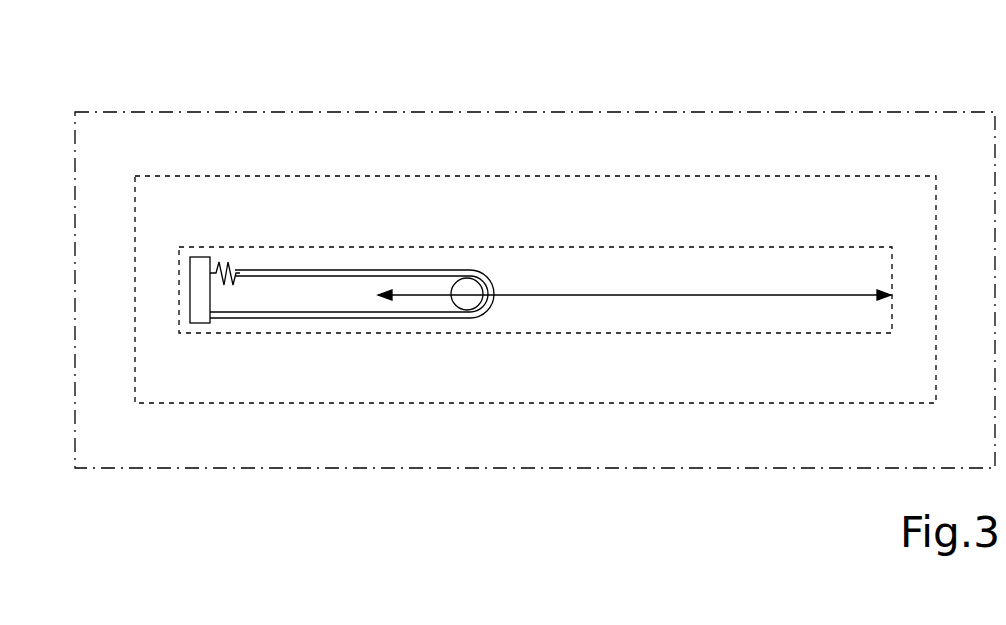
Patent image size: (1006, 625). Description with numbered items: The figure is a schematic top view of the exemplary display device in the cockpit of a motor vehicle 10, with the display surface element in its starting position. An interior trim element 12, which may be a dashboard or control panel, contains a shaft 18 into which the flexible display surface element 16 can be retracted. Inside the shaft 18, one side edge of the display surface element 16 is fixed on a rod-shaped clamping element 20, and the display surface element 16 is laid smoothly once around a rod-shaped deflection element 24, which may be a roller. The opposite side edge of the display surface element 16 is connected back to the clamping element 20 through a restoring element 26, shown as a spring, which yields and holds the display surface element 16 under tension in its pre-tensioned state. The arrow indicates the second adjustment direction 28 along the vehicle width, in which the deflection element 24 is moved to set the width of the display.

The motor vehicle 10 is at (650, 112).
The interior trim element 12 is at (770, 176).
The shaft 18 is at (406, 247).
The display surface element 16 is at (292, 270).
The restoring element 26 is at (224, 262).
The clamping element 20 is at (198, 257).
The deflection element 24 is at (468, 300).
The second adjustment direction 28 is at (628, 295).